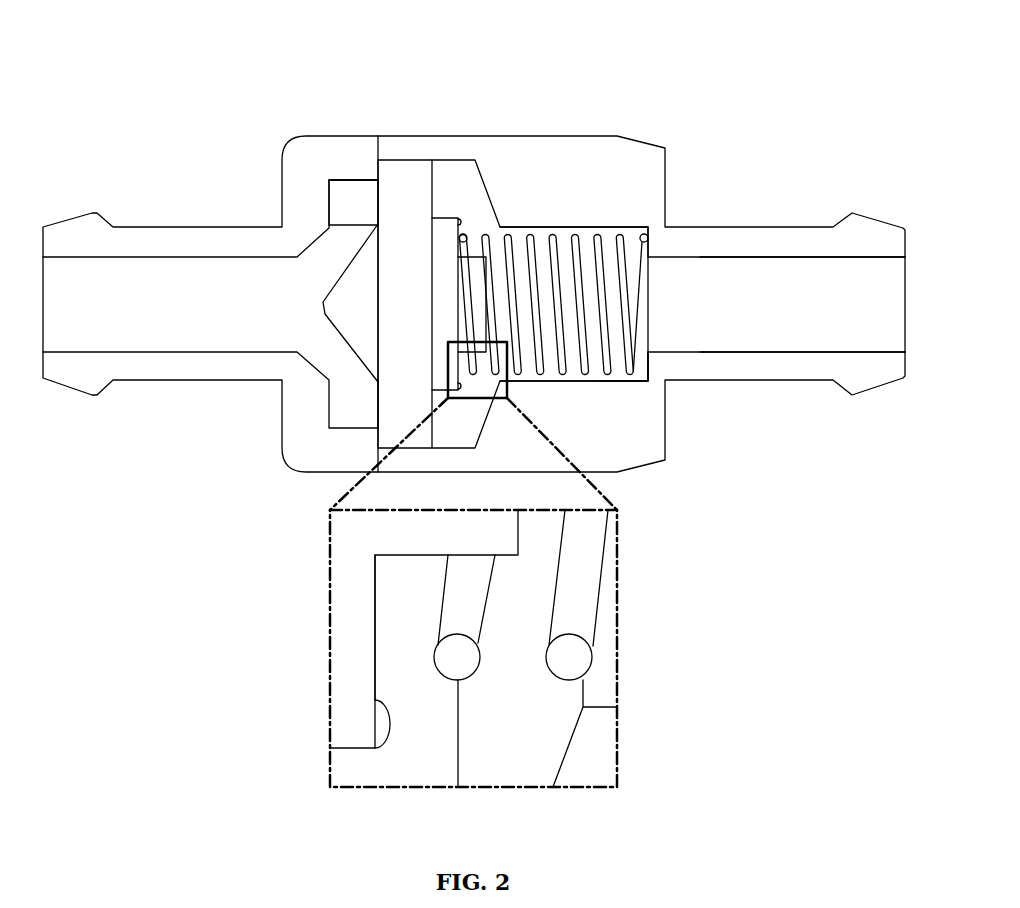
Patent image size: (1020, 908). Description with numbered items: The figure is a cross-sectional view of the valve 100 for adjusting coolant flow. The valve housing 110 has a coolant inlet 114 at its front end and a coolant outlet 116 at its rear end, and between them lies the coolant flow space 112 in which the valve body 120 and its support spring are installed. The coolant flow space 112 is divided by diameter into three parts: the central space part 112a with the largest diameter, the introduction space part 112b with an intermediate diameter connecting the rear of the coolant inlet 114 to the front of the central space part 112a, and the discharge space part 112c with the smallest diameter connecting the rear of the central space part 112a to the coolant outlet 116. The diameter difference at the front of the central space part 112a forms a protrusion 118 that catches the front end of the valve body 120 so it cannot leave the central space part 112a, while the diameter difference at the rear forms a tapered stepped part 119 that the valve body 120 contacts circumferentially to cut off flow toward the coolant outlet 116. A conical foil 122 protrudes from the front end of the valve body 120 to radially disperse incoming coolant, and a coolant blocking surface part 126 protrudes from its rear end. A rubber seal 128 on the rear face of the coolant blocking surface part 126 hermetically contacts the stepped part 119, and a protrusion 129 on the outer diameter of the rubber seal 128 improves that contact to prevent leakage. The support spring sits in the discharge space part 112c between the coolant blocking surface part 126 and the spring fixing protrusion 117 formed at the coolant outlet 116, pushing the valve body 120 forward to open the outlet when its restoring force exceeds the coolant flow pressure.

The valve 100 is at (119, 168).
The valve housing 110 is at (588, 125).
The coolant flow space 112 is at (350, 52).
The central space part 112a is at (456, 195).
The introduction space part 112b is at (354, 206).
The discharge space part 112c is at (604, 216).
The coolant inlet 114 is at (193, 272).
The coolant outlet 116 is at (823, 270).
The spring fixing protrusion 117 is at (627, 381).
The protrusion 118 is at (388, 168).
The stepped part 119 is at (495, 217).
The valve body 120 is at (362, 402).
The conical foil 122 is at (324, 313).
The coolant blocking surface part 126 is at (348, 672).
The rubber seal 128 is at (378, 658).
The protrusion 129 is at (388, 726).